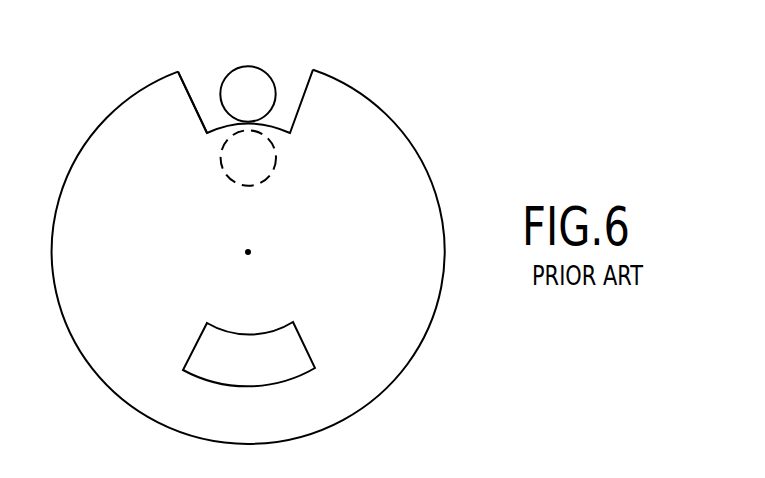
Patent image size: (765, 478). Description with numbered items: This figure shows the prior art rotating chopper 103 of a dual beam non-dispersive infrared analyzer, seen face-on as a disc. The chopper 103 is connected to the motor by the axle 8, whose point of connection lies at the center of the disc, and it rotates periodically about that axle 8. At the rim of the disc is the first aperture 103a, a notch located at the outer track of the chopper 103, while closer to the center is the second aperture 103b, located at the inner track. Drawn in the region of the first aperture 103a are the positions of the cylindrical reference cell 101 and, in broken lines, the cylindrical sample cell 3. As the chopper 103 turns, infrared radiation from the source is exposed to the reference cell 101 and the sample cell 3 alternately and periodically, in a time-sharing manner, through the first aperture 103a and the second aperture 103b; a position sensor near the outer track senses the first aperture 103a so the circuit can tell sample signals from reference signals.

The rotating chopper 103 is at (413, 356).
The first aperture 103a is at (186, 80).
The cylindrical reference cell 101 is at (253, 68).
The cylindrical sample cell 3 is at (265, 146).
The axle 8 is at (248, 252).
The second aperture 103b is at (217, 382).